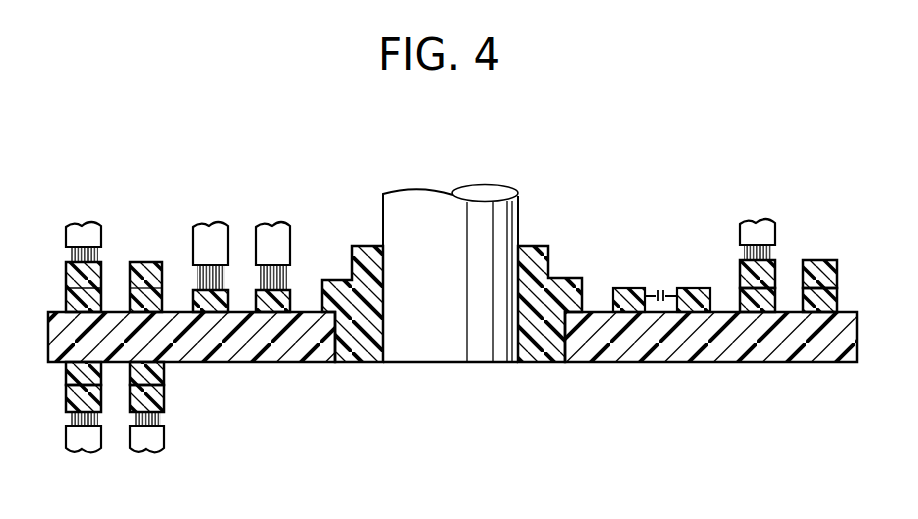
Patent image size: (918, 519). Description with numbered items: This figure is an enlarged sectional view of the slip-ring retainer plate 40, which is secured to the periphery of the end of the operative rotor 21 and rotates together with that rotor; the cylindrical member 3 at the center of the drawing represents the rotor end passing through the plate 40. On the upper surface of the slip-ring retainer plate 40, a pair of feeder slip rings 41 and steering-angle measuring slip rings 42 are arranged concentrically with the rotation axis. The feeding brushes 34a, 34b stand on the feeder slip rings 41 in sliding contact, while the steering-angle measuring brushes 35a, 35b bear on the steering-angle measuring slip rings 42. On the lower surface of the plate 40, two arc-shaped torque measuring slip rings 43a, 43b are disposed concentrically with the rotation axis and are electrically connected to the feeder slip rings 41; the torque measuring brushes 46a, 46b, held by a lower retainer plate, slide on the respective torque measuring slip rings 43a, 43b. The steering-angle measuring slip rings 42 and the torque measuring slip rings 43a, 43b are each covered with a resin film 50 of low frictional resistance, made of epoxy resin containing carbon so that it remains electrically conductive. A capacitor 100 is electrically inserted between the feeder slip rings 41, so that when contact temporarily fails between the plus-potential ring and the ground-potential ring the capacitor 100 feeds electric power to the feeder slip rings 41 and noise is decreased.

The shaft 3 is at (405, 222).
The operative rotor 21 is at (560, 288).
The feeding brush 34a is at (268, 229).
The feeding brush 34b is at (204, 229).
The steering-angle measuring brush 35a is at (765, 228).
The steering-angle measuring brush 35b is at (78, 229).
The slip-ring retainer plate 40 is at (720, 362).
The feeder slip ring 41 is at (673, 287).
The steering-angle measuring slip ring 42 is at (743, 297).
The torque measuring slip ring 43a is at (164, 371).
The torque measuring slip ring 43b is at (72, 376).
The torque measuring brush 46a is at (160, 440).
The torque measuring brush 46b is at (91, 444).
The resin film 50 is at (743, 268).
The capacitor 100 is at (667, 300).